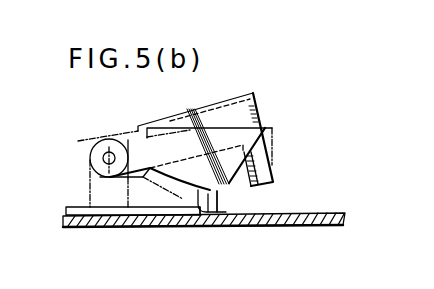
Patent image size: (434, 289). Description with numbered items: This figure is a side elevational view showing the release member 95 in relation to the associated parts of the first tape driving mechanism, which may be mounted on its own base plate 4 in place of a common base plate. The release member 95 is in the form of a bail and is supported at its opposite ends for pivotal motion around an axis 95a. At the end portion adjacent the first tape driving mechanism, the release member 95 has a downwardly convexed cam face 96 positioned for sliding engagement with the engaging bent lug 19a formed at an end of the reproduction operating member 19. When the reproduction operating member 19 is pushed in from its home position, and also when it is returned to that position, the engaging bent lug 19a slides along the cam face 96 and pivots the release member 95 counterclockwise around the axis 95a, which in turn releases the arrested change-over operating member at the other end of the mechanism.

The base plate 4 is at (129, 229).
The reproduction operating member 19 is at (78, 208).
The engaging bent lug 19a is at (230, 197).
The release member 95 is at (253, 93).
The axis 95a is at (103, 157).
The cam face 96 is at (200, 216).